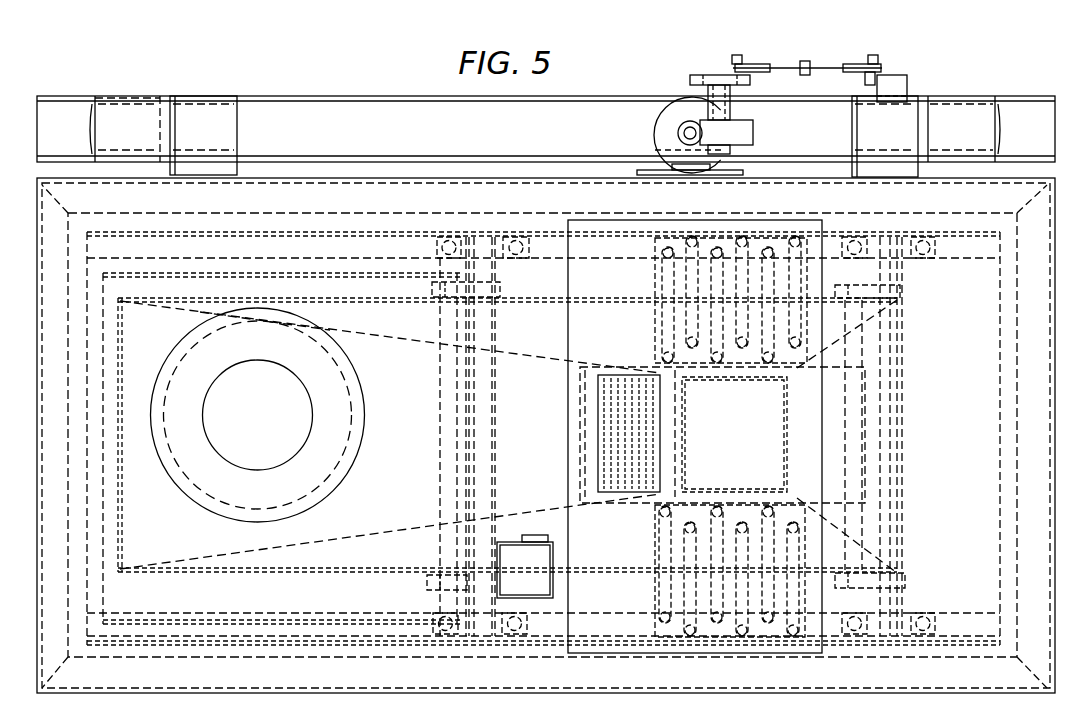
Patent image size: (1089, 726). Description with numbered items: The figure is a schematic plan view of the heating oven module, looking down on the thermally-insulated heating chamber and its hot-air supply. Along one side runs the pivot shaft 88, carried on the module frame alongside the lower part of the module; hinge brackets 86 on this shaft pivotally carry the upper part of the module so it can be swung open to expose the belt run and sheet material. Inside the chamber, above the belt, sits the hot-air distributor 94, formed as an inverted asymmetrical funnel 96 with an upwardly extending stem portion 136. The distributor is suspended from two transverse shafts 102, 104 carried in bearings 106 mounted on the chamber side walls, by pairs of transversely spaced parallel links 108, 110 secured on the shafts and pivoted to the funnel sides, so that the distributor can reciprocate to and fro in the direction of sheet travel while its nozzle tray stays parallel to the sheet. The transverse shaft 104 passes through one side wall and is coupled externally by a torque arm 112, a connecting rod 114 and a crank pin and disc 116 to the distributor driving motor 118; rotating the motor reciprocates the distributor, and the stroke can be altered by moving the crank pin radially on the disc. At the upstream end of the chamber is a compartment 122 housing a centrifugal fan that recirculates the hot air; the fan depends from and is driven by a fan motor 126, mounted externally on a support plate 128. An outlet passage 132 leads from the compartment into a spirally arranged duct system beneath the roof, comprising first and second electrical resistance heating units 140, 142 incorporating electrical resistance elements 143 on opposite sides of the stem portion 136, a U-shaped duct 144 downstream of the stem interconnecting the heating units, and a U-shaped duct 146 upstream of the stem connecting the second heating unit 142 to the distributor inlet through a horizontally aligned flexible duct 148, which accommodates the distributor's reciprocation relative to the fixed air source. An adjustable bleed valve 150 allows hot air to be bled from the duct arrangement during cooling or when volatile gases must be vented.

The hinge brackets 86 is at (240, 126).
The pivot shaft 88 is at (340, 97).
The hot-air distributor 94 is at (258, 300).
The inverted asymmetrical funnel 96 is at (385, 333).
The transverse shaft 102 is at (494, 273).
The transverse shaft 104 is at (902, 276).
The bearings 106 is at (498, 237).
The parallel links 108 is at (432, 287).
The parallel links 110 is at (900, 296).
The torque arm 112 is at (865, 79).
The connecting rod 114 is at (832, 64).
The crank pin and disc 116 is at (705, 75).
The distributor driving motor 118 is at (654, 132).
The compartment 122 is at (343, 561).
The fan motor 126 is at (283, 469).
The support plate 128 is at (315, 508).
The outlet passage 132 is at (338, 390).
The stem portion 136 is at (788, 440).
The first electrical resistance heating unit 140 is at (736, 372).
The second electrical resistance heating unit 142 is at (697, 492).
The electrical resistance elements 143 is at (655, 275).
The U-shaped duct 144 is at (964, 401).
The U-shaped duct 146 is at (526, 468).
The flexible duct 148 is at (606, 495).
The adjustable bleed valve 150 is at (553, 558).